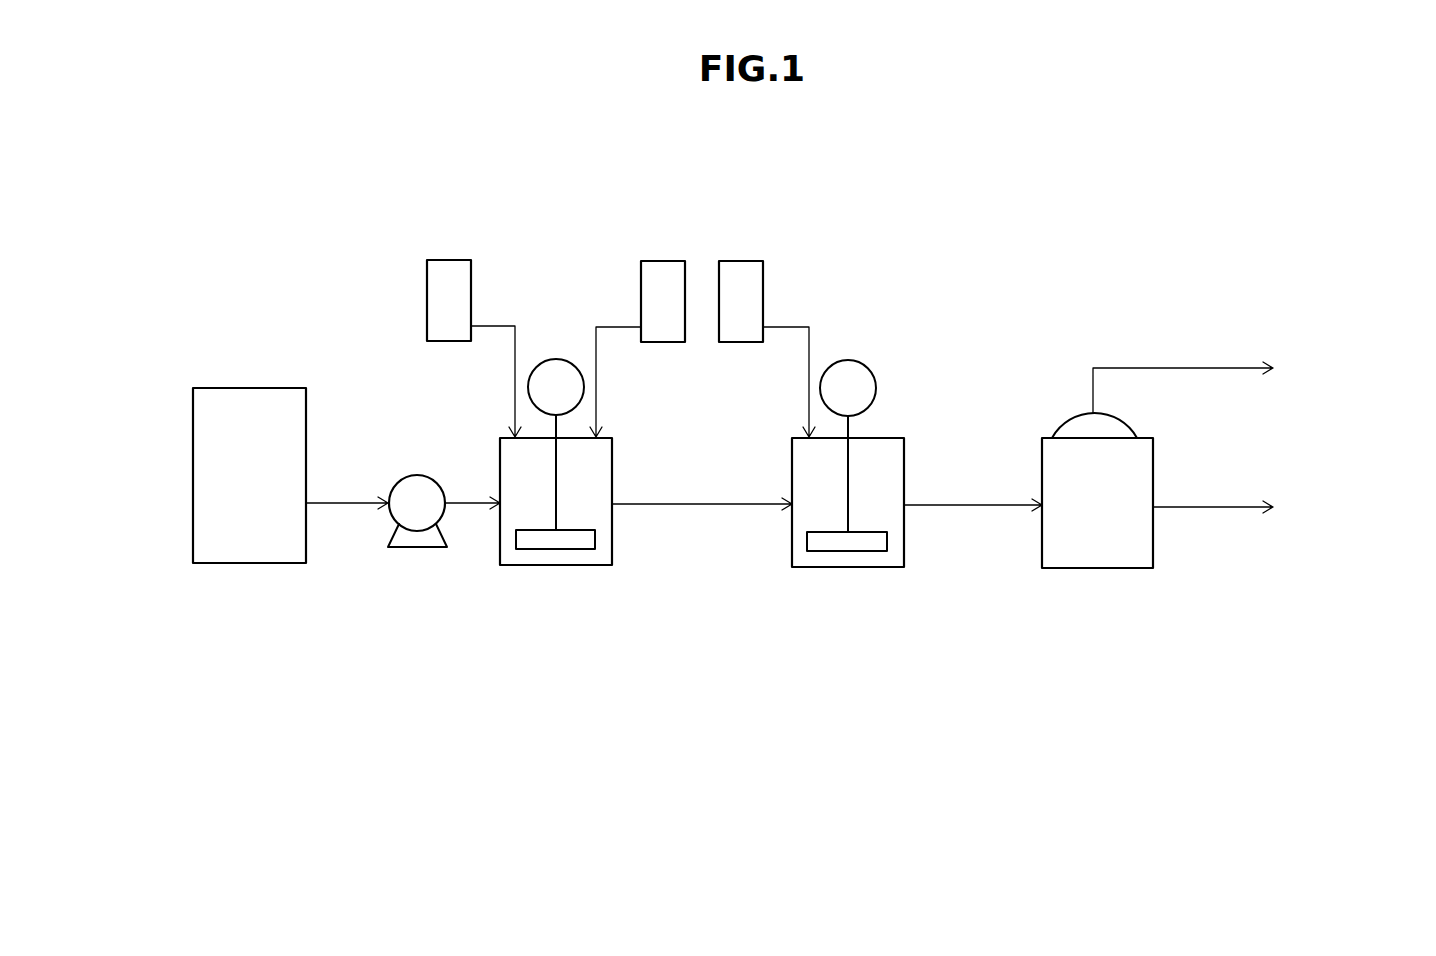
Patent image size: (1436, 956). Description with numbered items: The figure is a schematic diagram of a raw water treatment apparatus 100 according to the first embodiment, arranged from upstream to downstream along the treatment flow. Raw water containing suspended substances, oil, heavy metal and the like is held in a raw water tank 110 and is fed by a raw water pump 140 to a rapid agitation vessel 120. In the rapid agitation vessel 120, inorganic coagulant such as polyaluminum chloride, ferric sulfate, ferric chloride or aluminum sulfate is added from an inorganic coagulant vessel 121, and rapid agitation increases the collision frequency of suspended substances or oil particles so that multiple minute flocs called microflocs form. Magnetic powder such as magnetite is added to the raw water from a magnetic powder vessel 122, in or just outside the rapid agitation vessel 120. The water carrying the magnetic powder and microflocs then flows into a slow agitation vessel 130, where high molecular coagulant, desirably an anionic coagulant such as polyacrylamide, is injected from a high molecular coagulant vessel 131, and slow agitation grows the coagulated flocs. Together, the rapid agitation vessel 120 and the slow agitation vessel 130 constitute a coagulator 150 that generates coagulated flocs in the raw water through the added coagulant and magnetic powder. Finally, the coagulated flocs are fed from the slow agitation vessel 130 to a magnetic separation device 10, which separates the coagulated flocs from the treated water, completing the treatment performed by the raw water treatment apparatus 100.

The raw water treatment apparatus 100 is at (1029, 284).
The raw water tank 110 is at (249, 388).
The rapid agitation vessel 120 is at (553, 565).
The inorganic coagulant vessel 121 is at (450, 260).
The magnetic powder vessel 122 is at (662, 261).
The slow agitation vessel 130 is at (847, 567).
The high molecular coagulant vessel 131 is at (741, 261).
The raw water pump 140 is at (417, 475).
The coagulator 150 is at (515, 630).
The magnetic separation device 10 is at (1183, 468).